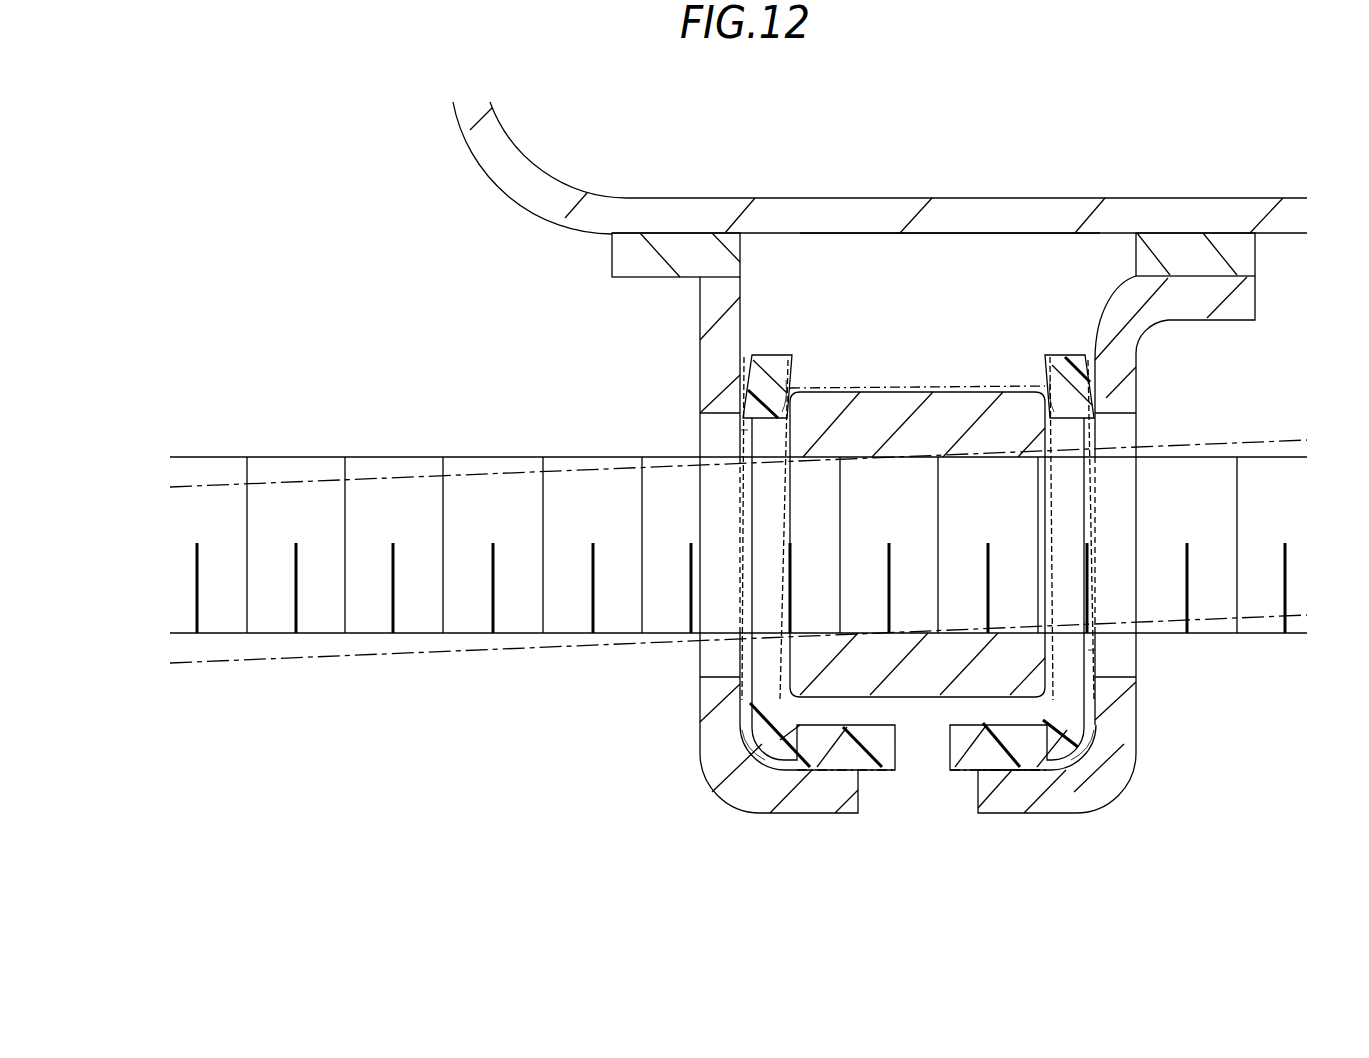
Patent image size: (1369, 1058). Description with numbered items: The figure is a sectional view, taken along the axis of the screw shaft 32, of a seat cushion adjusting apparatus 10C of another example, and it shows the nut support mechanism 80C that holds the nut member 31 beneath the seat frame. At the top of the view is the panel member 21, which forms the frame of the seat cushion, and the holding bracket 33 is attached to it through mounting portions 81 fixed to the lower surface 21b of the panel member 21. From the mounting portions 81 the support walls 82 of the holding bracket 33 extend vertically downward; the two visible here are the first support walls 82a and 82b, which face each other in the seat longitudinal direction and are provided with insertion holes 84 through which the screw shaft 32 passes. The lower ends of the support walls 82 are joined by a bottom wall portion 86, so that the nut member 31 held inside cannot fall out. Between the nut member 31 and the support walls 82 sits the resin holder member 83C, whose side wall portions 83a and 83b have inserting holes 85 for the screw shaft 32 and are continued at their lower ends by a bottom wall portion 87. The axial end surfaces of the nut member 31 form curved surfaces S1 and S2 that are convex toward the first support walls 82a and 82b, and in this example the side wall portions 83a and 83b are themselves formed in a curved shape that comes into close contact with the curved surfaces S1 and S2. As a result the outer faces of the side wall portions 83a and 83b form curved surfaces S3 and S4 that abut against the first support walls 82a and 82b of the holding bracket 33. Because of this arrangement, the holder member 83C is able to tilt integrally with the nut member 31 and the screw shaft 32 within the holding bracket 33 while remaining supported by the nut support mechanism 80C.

The seat cushion adjusting apparatus 10C is at (356, 164).
The panel member 21 is at (506, 186).
The lower surface 21b is at (952, 238).
The nut member 31 is at (912, 390).
The screw shaft 32 is at (287, 456).
The holding bracket 33 is at (859, 815).
The nut support mechanism 80C is at (659, 790).
The mounting portion 81 is at (676, 240).
The support wall 82 is at (926, 514).
The first support wall 82a is at (720, 515).
The first support wall 82b is at (1175, 514).
The side wall portion 83a is at (778, 355).
The side wall portion 83b is at (1086, 355).
The holder member 83C is at (947, 772).
The insertion hole 84 is at (1131, 436).
The inserting hole 85 is at (740, 430).
The bottom wall portion 86 is at (795, 815).
The bottom wall portion 87 is at (1003, 771).
The curved surface S1 is at (782, 390).
The curved surface S2 is at (1058, 396).
The curved surface S3 is at (745, 726).
The curved surface S4 is at (1086, 748).